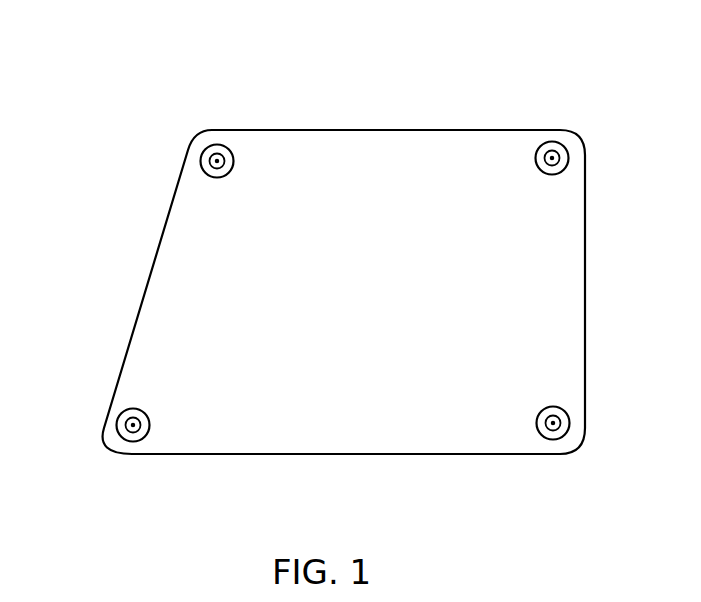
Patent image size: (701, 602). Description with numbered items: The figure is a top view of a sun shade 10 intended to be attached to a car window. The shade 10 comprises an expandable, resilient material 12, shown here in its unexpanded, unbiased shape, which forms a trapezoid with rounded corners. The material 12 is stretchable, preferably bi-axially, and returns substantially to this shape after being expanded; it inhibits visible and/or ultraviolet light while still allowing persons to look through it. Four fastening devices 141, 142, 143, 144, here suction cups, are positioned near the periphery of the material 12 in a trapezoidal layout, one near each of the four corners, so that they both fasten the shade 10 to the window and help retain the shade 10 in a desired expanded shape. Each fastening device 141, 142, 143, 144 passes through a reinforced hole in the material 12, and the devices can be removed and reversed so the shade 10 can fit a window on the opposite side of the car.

The sun shade 10 is at (486, 100).
The expandable, resilient material 12 is at (560, 271).
The fastening device 141 is at (569, 160).
The fastening device 142 is at (566, 436).
The fastening device 143 is at (116, 437).
The fastening device 144 is at (201, 154).